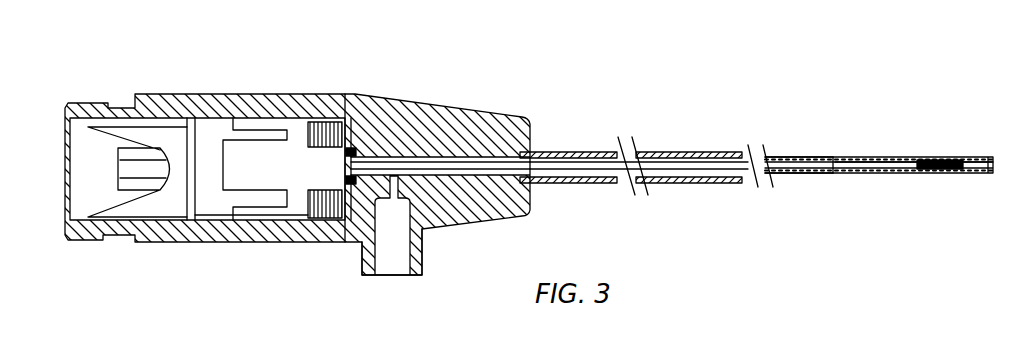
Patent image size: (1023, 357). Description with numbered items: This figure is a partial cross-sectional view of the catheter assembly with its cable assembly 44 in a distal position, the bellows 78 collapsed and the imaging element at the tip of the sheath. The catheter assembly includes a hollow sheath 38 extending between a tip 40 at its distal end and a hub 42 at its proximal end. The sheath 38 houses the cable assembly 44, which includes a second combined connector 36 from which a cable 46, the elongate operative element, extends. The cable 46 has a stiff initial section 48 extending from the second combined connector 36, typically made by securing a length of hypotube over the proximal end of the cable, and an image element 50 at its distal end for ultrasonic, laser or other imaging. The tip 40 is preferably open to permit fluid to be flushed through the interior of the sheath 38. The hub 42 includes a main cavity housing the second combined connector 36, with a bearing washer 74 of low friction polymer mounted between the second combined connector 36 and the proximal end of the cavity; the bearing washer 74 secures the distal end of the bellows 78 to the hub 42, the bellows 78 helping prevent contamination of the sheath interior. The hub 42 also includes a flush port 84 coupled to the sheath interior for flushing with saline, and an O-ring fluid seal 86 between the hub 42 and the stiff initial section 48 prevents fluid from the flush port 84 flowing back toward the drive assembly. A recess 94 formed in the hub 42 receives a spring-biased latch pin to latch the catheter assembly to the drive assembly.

The second combined connector 36 is at (160, 194).
The hollow sheath 38 is at (792, 158).
The tip 40 is at (897, 175).
The hub 42 is at (452, 110).
The cable assembly 44 is at (800, 173).
The cable 46 is at (835, 175).
The stiff initial section 48 is at (555, 185).
The image element 50 is at (948, 157).
The bearing washer 74 is at (353, 108).
The bellows 78 is at (315, 218).
The flush port 84 is at (366, 277).
The O-ring fluid seal 86 is at (356, 150).
The recess 94 is at (289, 242).